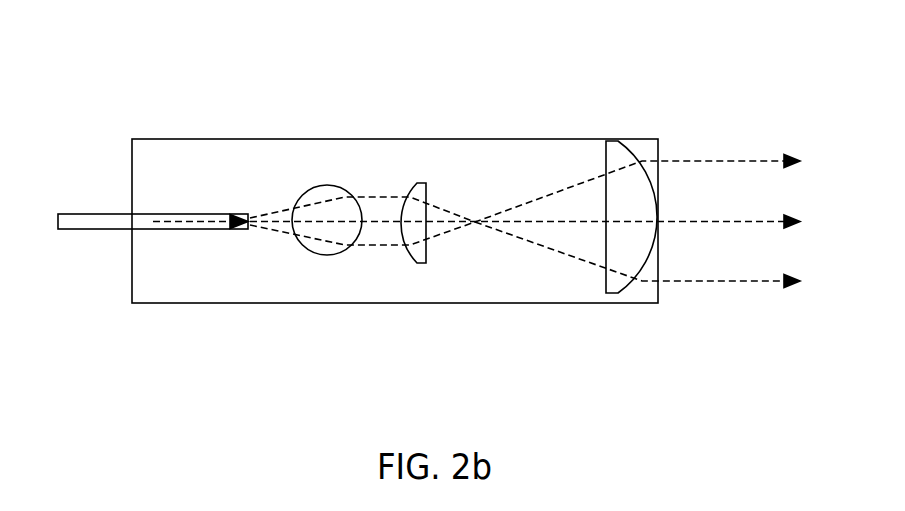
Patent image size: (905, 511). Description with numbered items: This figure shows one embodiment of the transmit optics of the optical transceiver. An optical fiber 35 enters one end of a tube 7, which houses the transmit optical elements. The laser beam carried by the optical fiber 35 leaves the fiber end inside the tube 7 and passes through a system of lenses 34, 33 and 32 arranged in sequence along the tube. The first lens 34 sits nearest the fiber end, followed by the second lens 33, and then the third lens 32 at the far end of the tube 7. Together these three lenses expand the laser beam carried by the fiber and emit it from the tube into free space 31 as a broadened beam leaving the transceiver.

The tube 7 is at (198, 139).
The free space 31 is at (735, 157).
The lens 32 is at (627, 152).
The lens 33 is at (422, 183).
The lens 34 is at (327, 194).
The optical fiber 35 is at (105, 222).